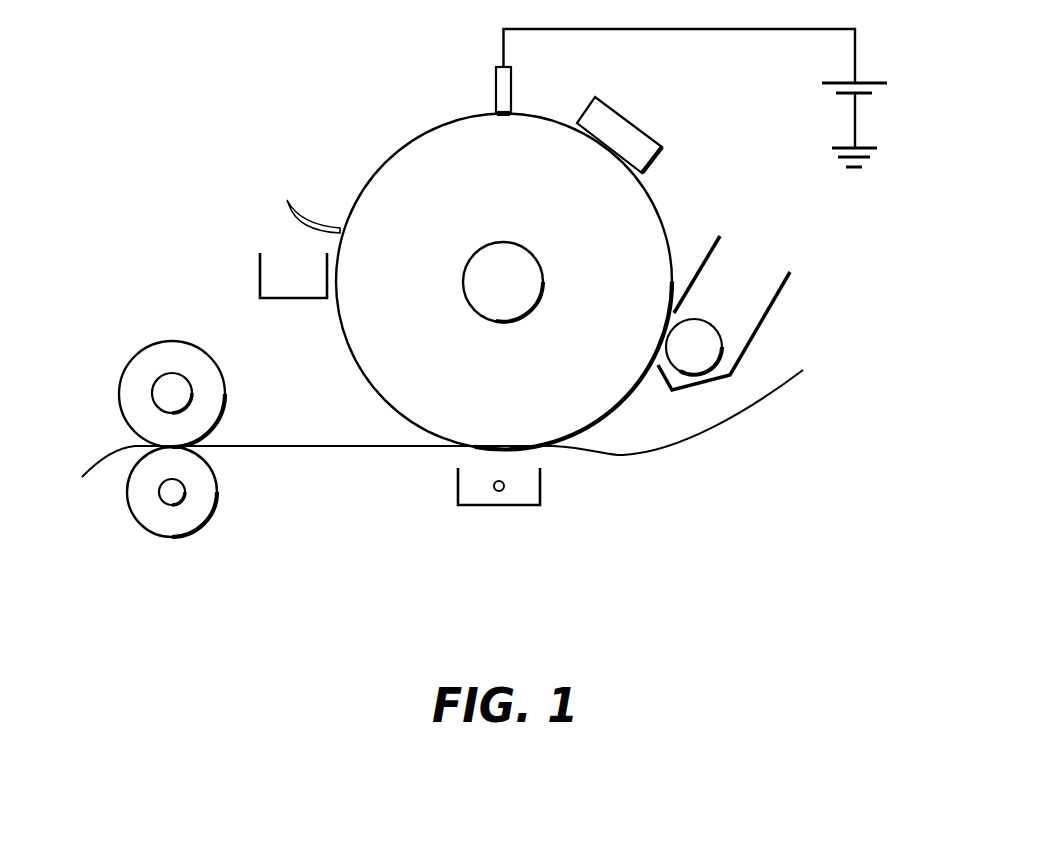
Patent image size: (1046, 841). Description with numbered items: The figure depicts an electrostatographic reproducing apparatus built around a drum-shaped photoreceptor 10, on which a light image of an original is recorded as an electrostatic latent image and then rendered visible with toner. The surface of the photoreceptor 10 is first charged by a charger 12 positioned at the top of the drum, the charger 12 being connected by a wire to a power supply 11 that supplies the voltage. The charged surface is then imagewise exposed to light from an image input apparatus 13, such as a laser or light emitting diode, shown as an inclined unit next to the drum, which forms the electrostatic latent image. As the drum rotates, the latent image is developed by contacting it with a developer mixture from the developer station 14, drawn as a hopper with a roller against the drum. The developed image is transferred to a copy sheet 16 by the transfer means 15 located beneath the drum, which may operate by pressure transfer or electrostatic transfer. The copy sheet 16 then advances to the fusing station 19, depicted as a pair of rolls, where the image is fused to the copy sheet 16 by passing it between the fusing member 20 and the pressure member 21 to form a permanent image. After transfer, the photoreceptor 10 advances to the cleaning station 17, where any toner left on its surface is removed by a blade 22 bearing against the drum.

The photoreceptor 10 is at (662, 215).
The power supply 11 is at (855, 58).
The charger 12 is at (508, 95).
The image input apparatus 13 is at (635, 135).
The developer station 14 is at (737, 284).
The transfer means 15 is at (540, 503).
The copy sheet 16 is at (753, 407).
The cleaning station 17 is at (275, 228).
The fusing station 19 is at (161, 441).
The fusing member 20 is at (217, 380).
The pressure member 21 is at (210, 500).
The blade 22 is at (308, 218).